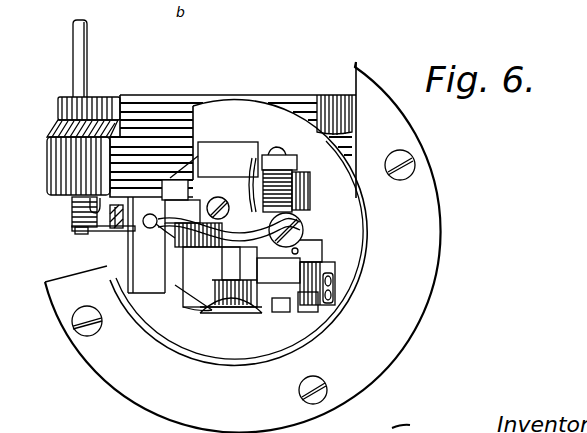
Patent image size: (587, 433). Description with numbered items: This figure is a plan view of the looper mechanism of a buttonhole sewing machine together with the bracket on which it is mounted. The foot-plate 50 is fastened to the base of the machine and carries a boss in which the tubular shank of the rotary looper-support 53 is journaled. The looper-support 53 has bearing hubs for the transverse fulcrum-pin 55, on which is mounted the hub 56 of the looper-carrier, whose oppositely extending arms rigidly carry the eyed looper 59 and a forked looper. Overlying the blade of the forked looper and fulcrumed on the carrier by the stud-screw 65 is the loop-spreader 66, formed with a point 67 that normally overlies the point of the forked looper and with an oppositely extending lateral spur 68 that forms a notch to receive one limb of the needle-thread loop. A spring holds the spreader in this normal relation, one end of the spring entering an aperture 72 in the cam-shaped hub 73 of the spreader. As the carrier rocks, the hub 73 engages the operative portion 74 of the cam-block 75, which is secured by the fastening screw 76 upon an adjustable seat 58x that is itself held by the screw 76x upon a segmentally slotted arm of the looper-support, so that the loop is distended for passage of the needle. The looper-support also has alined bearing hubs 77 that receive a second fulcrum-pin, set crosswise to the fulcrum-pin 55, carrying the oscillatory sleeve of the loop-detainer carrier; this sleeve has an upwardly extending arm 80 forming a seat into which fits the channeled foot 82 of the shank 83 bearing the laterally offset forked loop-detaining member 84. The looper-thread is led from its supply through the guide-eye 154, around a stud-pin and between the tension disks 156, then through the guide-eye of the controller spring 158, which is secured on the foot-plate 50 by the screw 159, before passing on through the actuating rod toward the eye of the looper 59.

The foot-plate 50 is at (47, 163).
The guide-eye 154 is at (90, 208).
The screw 159 is at (80, 233).
The controller spring 158 is at (101, 231).
The tension disks 156 is at (115, 228).
The bearing hubs 77 is at (316, 194).
The eyed looper 59 is at (172, 246).
The foot 82 is at (296, 158).
The shank 83 is at (263, 156).
The upwardly extending arm 80 is at (293, 168).
The forked loop-detaining member 84 is at (250, 187).
The aperture 72 is at (329, 254).
The point 67 is at (198, 242).
The loop-spreader 66 is at (229, 231).
The stud-screw 65 is at (286, 230).
The hub 56 is at (225, 268).
The lateral spur 68 is at (233, 263).
The operative portion 74 is at (297, 264).
The rotary looper-support 53 is at (205, 291).
The cam-shaped hub 73 is at (312, 239).
The cam-block 75 is at (320, 283).
The fastening screw 76 is at (335, 287).
The transverse fulcrum-pin 55 is at (233, 314).
The screw 76x is at (282, 312).
The adjustable seat 58x is at (318, 304).